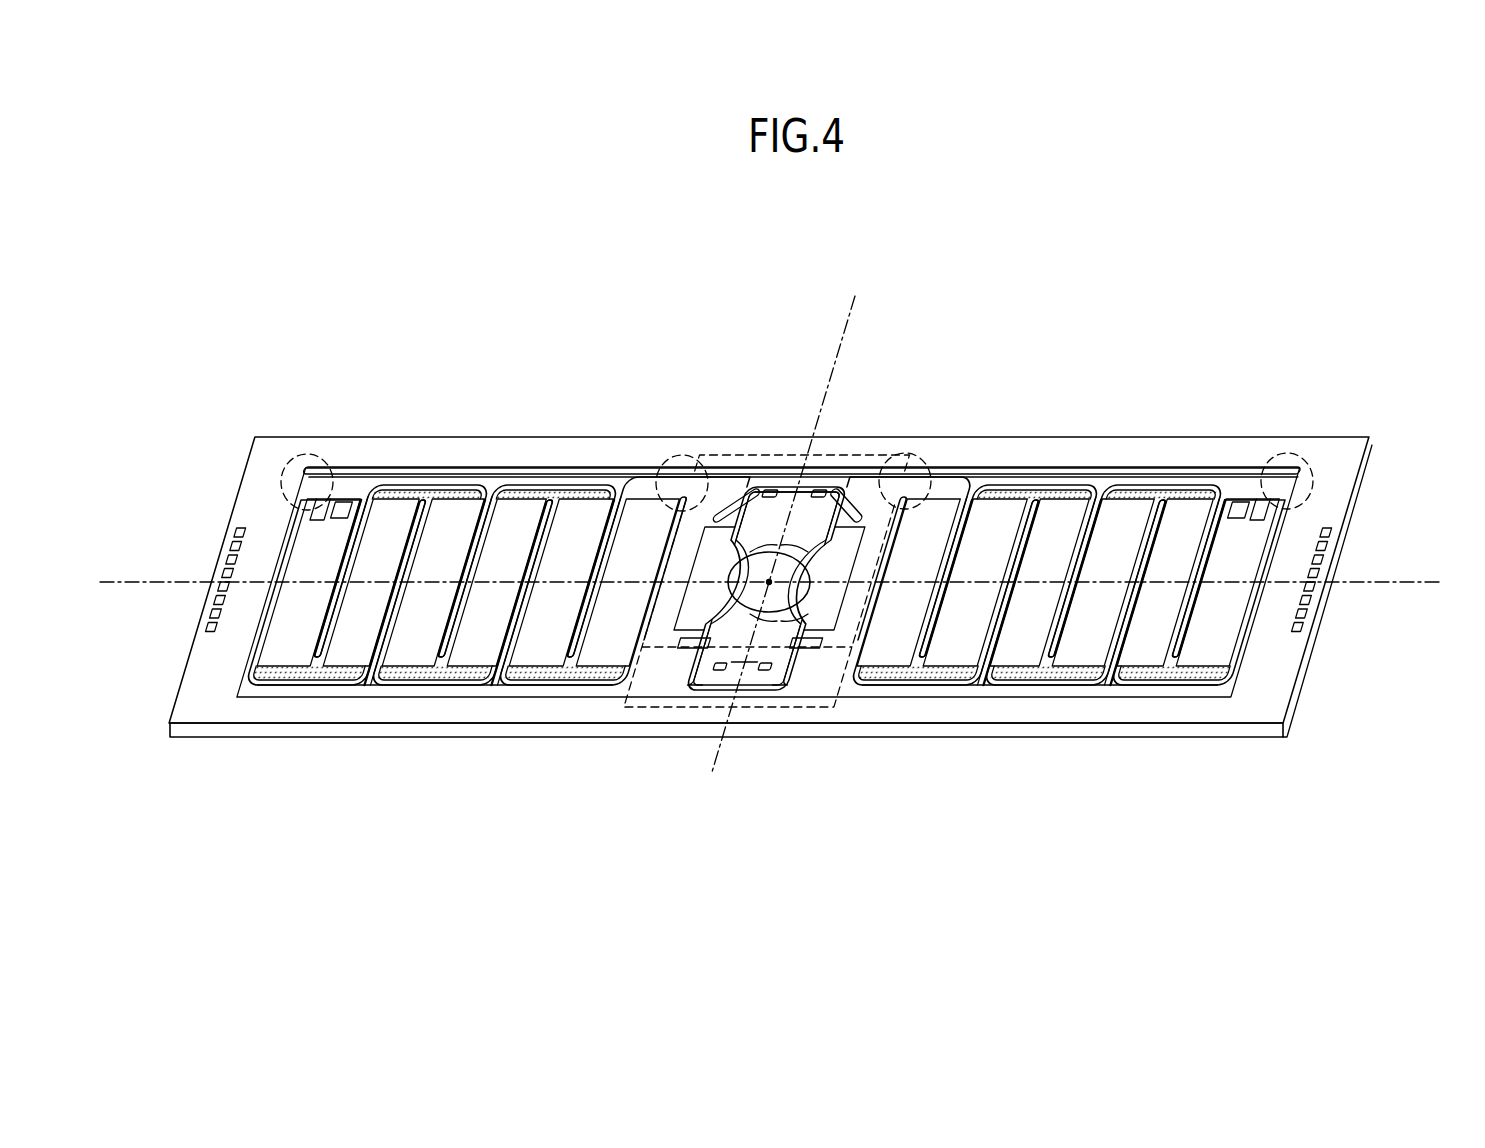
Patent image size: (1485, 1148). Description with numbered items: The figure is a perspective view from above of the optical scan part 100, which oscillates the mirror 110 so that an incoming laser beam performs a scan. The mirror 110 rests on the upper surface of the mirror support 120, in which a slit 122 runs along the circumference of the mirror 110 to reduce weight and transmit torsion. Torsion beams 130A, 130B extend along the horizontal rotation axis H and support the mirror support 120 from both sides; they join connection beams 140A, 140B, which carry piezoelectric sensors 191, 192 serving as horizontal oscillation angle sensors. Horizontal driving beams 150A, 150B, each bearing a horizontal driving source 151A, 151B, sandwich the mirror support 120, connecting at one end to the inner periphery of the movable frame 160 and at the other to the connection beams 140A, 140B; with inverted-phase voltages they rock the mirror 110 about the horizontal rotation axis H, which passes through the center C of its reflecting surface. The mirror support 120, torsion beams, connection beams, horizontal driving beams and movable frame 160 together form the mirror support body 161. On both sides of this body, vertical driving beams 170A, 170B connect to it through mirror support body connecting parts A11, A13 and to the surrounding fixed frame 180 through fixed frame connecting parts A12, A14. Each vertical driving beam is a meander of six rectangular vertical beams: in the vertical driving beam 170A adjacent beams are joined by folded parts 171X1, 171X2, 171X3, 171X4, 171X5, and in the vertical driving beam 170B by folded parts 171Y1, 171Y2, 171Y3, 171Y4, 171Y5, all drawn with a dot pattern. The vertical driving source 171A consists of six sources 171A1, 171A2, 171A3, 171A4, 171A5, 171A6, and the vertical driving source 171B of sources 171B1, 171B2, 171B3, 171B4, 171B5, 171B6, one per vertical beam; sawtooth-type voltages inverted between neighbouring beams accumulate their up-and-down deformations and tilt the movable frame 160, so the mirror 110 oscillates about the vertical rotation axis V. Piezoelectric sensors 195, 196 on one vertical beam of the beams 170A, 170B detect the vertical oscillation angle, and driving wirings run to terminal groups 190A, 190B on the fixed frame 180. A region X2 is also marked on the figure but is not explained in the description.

The optical scan part 100 is at (226, 290).
The mirror 110 is at (792, 600).
The mirror support 120 is at (752, 640).
The slit 122 is at (757, 538).
The torsion beam 130A is at (762, 660).
The torsion beam 130B is at (770, 489).
The connection beam 140A is at (717, 664).
The connection beam 140B is at (831, 500).
The horizontal driving beam 150A is at (808, 650).
The horizontal driving beam 150B is at (693, 647).
The horizontal driving source 151A is at (848, 508).
The horizontal driving source 151B is at (722, 510).
The movable frame 160 is at (791, 503).
The mirror support body 161 is at (724, 536).
The vertical driving beam 170A is at (888, 690).
The vertical driving beam 170B is at (592, 690).
The vertical driving source 171A is at (925, 833).
The vertical driving source 171A1 is at (900, 652).
The vertical driving source 171A2 is at (963, 652).
The vertical driving source 171A3 is at (1026, 652).
The vertical driving source 171A4 is at (1089, 652).
The vertical driving source 171A5 is at (1152, 652).
The vertical driving source 171A6 is at (1214, 652).
The vertical driving source 171B is at (175, 833).
The vertical driving source 171B1 is at (600, 652).
The vertical driving source 171B2 is at (537, 652).
The vertical driving source 171B3 is at (473, 652).
The vertical driving source 171B4 is at (410, 652).
The vertical driving source 171B5 is at (347, 652).
The vertical driving source 171B6 is at (284, 652).
The folded part 171X1 is at (979, 492).
The folded part 171X2 is at (1039, 500).
The folded part 171X3 is at (1105, 492).
The folded part 171X4 is at (1165, 500).
The folded part 171X5 is at (1229, 492).
The folded part 171Y1 is at (561, 675).
The folded part 171Y2 is at (549, 500).
The folded part 171Y3 is at (481, 505).
The folded part 171Y4 is at (431, 488).
The folded part 171Y5 is at (363, 492).
The fixed frame 180 is at (1300, 665).
The terminal group 190A is at (1338, 527).
The terminal group 190B is at (214, 525).
The piezoelectric sensor 191 is at (746, 648).
The piezoelectric sensor 192 is at (762, 546).
The piezoelectric sensor 195 is at (1241, 500).
The piezoelectric sensor 196 is at (343, 500).
The mirror support body connecting part A11 is at (922, 462).
The fixed frame connecting part A12 is at (1306, 471).
The mirror support body connecting part A13 is at (667, 462).
The fixed frame connecting part A14 is at (285, 469).
The center C is at (772, 579).
The horizontal rotation axis H is at (850, 331).
The vertical rotation axis V is at (1437, 578).
The region X2 is at (793, 712).